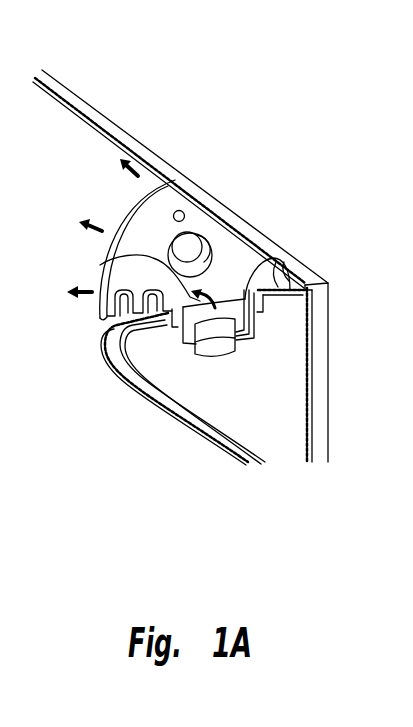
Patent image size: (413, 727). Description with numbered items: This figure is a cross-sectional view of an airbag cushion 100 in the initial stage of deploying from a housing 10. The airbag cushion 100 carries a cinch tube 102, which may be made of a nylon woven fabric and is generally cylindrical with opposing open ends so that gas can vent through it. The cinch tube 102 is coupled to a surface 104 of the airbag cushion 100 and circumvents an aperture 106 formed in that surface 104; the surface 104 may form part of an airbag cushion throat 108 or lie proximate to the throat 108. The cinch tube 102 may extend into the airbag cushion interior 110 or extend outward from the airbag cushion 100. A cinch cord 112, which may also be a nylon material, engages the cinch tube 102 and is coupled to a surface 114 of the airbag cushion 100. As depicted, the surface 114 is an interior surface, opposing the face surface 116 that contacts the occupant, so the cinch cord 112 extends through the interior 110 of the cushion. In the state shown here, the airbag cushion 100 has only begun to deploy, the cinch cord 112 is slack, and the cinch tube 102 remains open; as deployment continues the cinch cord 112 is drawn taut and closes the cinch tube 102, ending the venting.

The housing 10 is at (275, 406).
The airbag cushion 100 is at (176, 148).
The cinch tube 102 is at (235, 258).
The surface 104 is at (232, 265).
The aperture 106 is at (188, 247).
The airbag cushion throat 108 is at (293, 261).
The airbag cushion interior 110 is at (168, 238).
The cinch cord 112 is at (122, 222).
The surface 114 is at (127, 293).
The face surface 116 is at (137, 248).